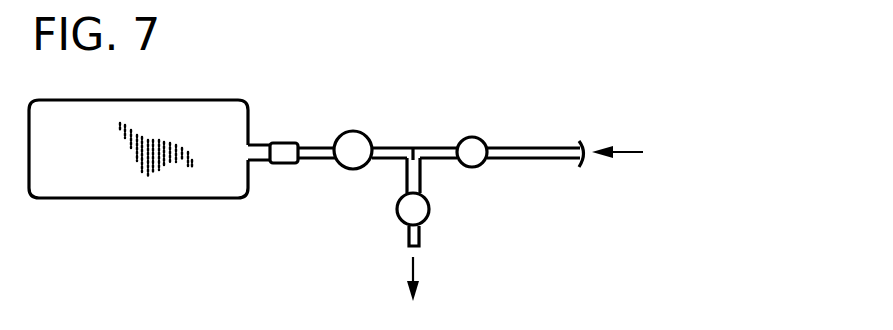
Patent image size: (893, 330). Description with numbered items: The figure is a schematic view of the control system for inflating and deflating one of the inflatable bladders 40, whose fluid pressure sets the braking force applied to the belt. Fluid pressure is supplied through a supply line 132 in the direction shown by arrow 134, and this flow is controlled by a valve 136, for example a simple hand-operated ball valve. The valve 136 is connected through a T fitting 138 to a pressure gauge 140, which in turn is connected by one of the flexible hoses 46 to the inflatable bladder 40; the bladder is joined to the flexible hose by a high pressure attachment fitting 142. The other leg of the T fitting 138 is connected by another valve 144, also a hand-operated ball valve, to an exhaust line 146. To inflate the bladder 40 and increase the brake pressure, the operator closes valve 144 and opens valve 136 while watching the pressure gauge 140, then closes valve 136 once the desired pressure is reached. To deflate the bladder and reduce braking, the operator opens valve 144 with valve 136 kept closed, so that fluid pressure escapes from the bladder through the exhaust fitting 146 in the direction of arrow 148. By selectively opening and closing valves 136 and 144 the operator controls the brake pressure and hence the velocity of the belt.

The inflatable bladder 40 is at (98, 181).
The flexible hose 46 is at (315, 147).
The supply line 132 is at (552, 148).
The arrow 134 is at (631, 152).
The valve 136 is at (478, 139).
The T fitting 138 is at (410, 147).
The pressure gauge 140 is at (351, 169).
The high pressure attachment fitting 142 is at (280, 162).
The valve 144 is at (431, 203).
The exhaust line 146 is at (421, 232).
The arrow 148 is at (413, 264).